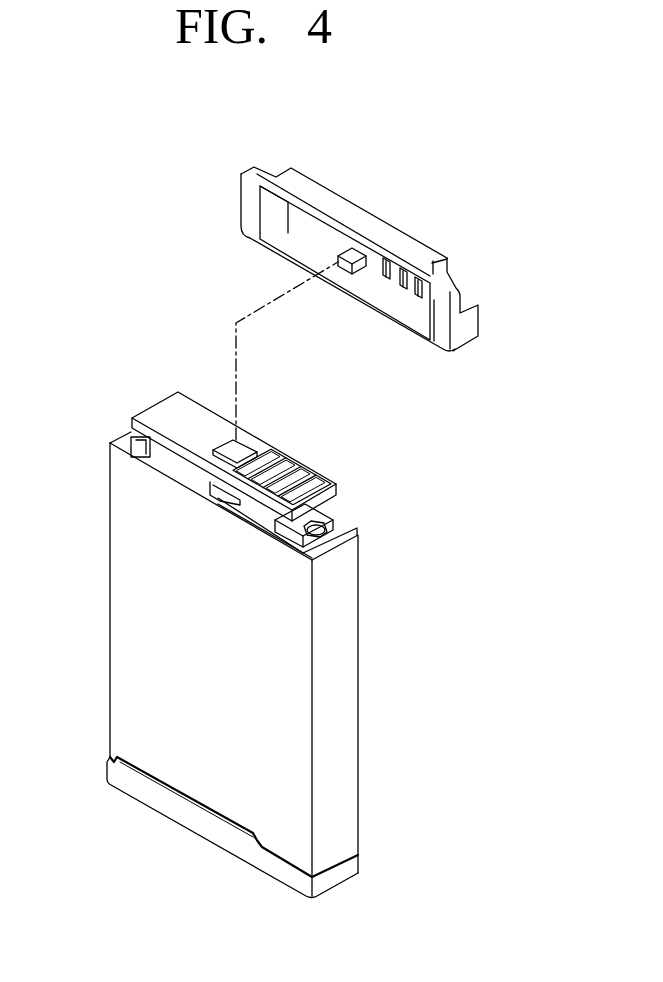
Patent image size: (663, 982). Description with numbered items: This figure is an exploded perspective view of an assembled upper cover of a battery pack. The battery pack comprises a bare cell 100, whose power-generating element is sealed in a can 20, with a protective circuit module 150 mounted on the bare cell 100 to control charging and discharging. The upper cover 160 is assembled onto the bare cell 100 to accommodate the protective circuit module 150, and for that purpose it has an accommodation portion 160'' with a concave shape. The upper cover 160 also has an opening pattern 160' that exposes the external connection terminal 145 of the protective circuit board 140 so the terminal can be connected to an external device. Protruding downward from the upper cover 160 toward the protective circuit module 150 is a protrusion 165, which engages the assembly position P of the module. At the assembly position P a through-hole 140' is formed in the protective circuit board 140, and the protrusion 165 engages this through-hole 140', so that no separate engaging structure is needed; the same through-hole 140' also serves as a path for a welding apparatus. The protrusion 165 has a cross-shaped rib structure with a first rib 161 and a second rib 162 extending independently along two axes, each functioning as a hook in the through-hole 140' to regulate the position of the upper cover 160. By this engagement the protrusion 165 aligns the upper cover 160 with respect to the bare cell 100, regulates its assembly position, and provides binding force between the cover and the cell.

The can 20 is at (348, 644).
The bare cell 100 is at (277, 614).
The protective circuit board 140 is at (248, 439).
The through-hole 140' is at (265, 428).
The external connection terminal 145 is at (320, 483).
The protective circuit module 150 is at (209, 439).
The upper cover 160 is at (336, 240).
The opening pattern 160' is at (372, 317).
The accommodation portion 160'' is at (254, 254).
The first rib 161 is at (363, 247).
The second rib 162 is at (372, 257).
The protrusion 165 is at (438, 163).
The assembly position P is at (221, 405).